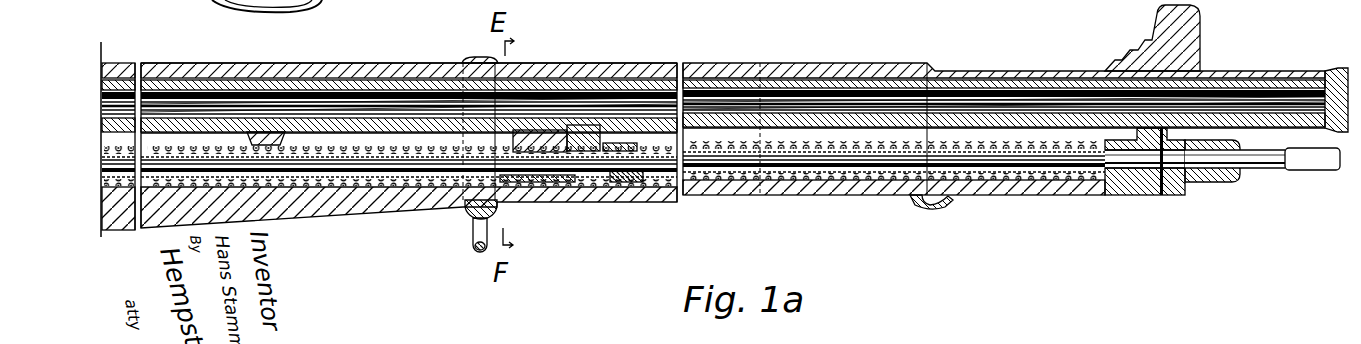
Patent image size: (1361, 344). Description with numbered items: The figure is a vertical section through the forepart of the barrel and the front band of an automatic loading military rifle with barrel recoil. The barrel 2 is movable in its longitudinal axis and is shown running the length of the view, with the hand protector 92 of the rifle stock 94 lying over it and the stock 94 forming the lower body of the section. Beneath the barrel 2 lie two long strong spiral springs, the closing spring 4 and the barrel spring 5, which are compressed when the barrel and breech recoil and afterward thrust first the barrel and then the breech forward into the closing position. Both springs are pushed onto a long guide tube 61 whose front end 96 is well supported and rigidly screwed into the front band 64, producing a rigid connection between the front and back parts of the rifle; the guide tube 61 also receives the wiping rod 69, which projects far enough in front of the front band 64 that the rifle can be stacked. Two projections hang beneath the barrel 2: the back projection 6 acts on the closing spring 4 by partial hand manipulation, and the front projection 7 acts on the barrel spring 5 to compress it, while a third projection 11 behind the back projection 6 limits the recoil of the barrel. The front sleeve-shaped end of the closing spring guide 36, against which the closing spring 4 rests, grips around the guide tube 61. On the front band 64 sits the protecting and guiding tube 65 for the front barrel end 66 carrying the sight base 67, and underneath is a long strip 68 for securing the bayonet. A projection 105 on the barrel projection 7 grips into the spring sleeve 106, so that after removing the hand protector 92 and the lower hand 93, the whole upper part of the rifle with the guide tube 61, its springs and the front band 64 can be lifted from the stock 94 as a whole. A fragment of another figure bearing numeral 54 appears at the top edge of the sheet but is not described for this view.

The barrel 2 is at (1030, 84).
The closing spring 4 is at (320, 184).
The barrel spring 5 is at (757, 189).
The back projection 6 is at (590, 152).
The front projection 7 is at (1172, 187).
The third projection 11 is at (266, 140).
The closing spring guide 36 is at (541, 142).
The lever 54 is at (286, 10).
The guide tube 61 is at (664, 189).
The front band 64 is at (848, 191).
The protecting and guiding tube 65 is at (975, 79).
The front barrel end 66 is at (1266, 76).
The sight base 67 is at (1140, 37).
The long strip 68 is at (1083, 193).
The wiping rod 69 is at (1050, 162).
The hand protector 92 is at (393, 66).
The lower hand 93 is at (476, 60).
The rifle stock 94 is at (411, 199).
The front end of the guide tube 96 is at (1226, 182).
The projection 105 is at (1163, 140).
The spring sleeve 106 is at (1128, 195).